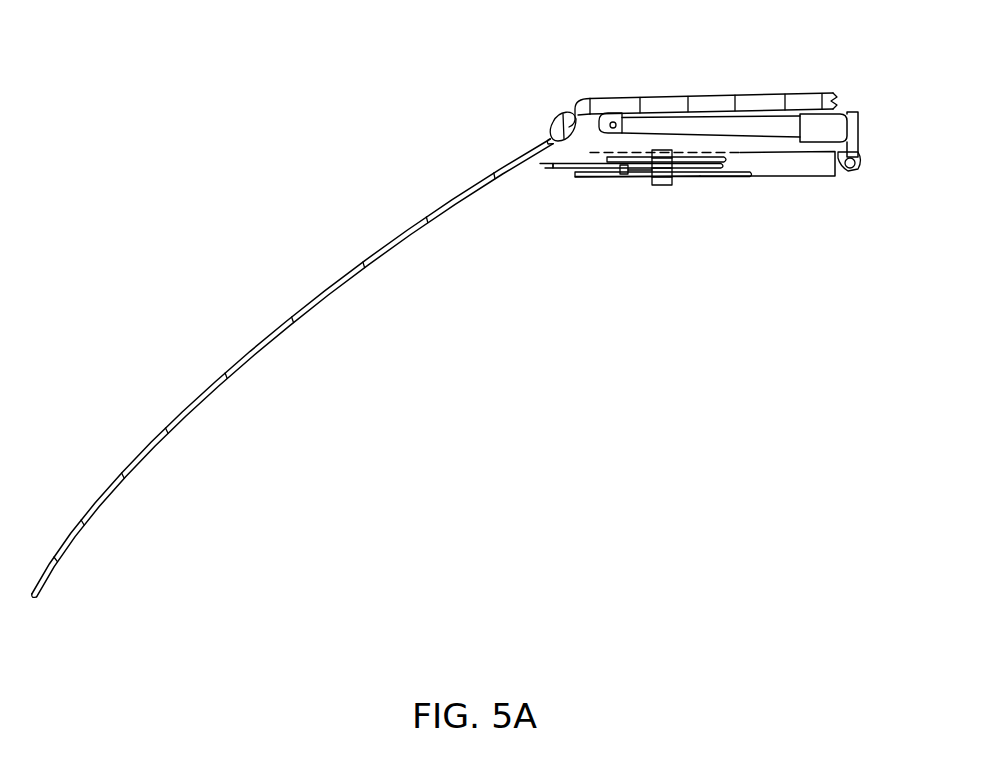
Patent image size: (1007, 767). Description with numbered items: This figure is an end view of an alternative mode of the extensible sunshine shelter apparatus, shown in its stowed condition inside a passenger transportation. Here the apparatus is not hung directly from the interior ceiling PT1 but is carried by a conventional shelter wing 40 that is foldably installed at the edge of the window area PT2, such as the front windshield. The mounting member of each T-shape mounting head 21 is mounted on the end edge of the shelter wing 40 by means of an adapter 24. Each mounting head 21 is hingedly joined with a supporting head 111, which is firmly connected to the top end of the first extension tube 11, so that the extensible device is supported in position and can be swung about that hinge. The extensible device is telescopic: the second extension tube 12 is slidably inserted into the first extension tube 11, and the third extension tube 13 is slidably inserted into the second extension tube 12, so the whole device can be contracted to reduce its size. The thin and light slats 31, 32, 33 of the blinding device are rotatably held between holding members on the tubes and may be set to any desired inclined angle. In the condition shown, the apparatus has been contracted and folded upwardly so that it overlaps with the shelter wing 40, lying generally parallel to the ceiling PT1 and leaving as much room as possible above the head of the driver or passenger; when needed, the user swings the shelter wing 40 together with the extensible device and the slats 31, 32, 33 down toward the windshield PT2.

The interior ceiling PT1 is at (698, 103).
The window area PT2 is at (210, 389).
The shelter wing 40 is at (643, 127).
The adapter 24 is at (853, 120).
The mounting head 21 is at (861, 163).
The supporting head 111 is at (838, 160).
The first extension tube 11 is at (762, 166).
The slat 31 is at (703, 173).
The slat 32 is at (565, 168).
The slat 33 is at (545, 166).
The second extension tube 12 is at (646, 175).
The third extension tube 13 is at (630, 172).